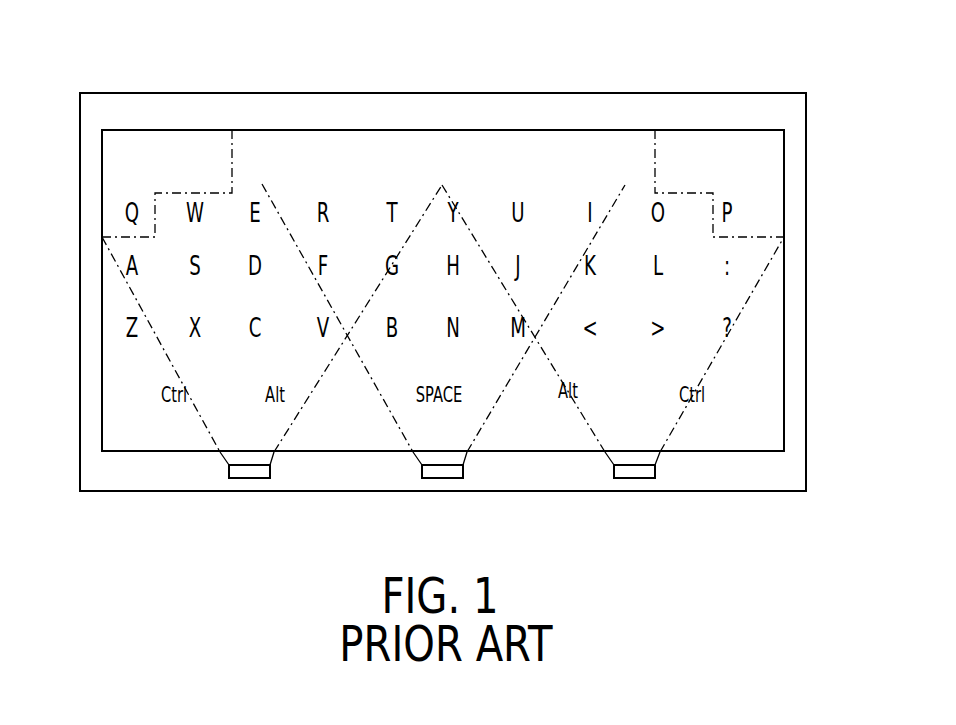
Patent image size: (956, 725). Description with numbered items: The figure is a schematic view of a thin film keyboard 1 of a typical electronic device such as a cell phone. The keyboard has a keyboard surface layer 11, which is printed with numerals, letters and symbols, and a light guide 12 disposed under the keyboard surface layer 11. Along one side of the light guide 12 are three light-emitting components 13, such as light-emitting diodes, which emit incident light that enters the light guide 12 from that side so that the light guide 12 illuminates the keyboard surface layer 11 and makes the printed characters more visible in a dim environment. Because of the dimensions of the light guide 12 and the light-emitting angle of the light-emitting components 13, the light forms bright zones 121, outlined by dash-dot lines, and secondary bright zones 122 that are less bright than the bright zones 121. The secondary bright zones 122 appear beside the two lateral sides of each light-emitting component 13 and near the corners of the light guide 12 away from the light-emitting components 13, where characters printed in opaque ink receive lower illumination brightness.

The thin film keyboard 1 is at (466, 259).
The keyboard surface layer 11 is at (443, 248).
The light guide 12 is at (443, 247).
The bright zones 121 is at (443, 248).
The secondary bright zones 122 is at (474, 295).
The light-emitting components 13 is at (440, 498).